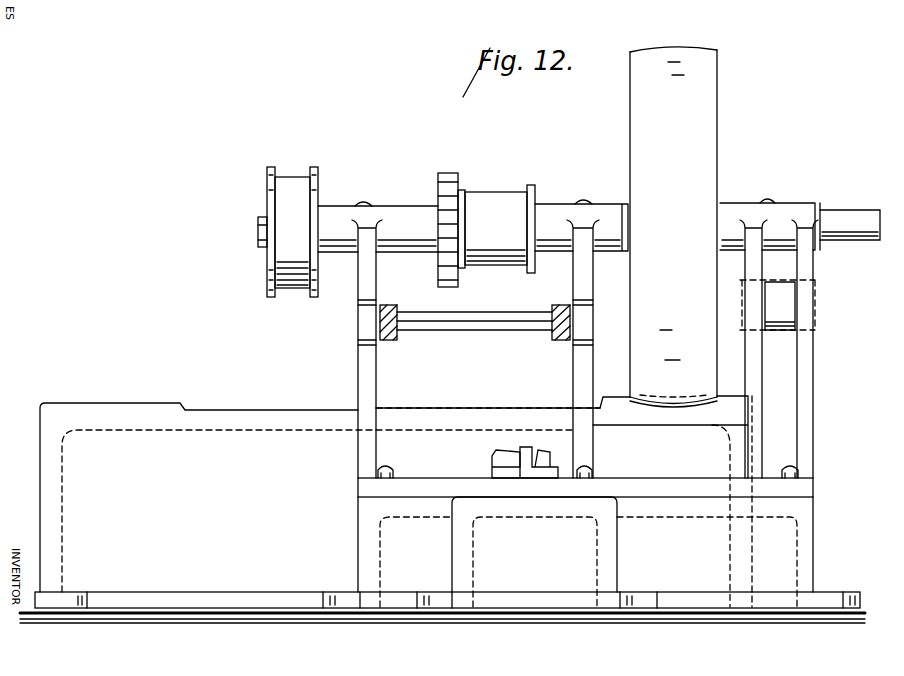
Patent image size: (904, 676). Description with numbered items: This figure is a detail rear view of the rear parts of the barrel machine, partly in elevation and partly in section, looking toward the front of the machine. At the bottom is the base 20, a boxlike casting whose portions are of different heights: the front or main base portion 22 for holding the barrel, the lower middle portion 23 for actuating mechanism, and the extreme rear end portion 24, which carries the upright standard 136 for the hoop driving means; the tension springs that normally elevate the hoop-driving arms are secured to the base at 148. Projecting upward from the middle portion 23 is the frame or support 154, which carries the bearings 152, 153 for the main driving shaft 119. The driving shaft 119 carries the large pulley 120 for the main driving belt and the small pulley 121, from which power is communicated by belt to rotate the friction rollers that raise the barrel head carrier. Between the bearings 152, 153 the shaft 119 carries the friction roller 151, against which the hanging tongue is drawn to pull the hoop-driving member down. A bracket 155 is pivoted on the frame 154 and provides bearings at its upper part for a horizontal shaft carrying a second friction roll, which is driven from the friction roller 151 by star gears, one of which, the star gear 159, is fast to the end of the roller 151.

The base 20 is at (442, 618).
The front or main base portion 22 is at (396, 501).
The lower middle portion 23 is at (707, 562).
The extreme rear end portion 24 is at (498, 552).
The driving shaft 119 is at (258, 228).
The pulley 120 is at (673, 227).
The small pulley 121 is at (291, 184).
The upright standard 136 is at (500, 458).
The spring securing point 148 is at (542, 458).
The friction roller 151 is at (487, 200).
The bearing 152 is at (576, 212).
The bearing 153 is at (387, 213).
The frame 154 is at (365, 446).
The bracket 155 is at (397, 340).
The star gear 159 is at (440, 263).